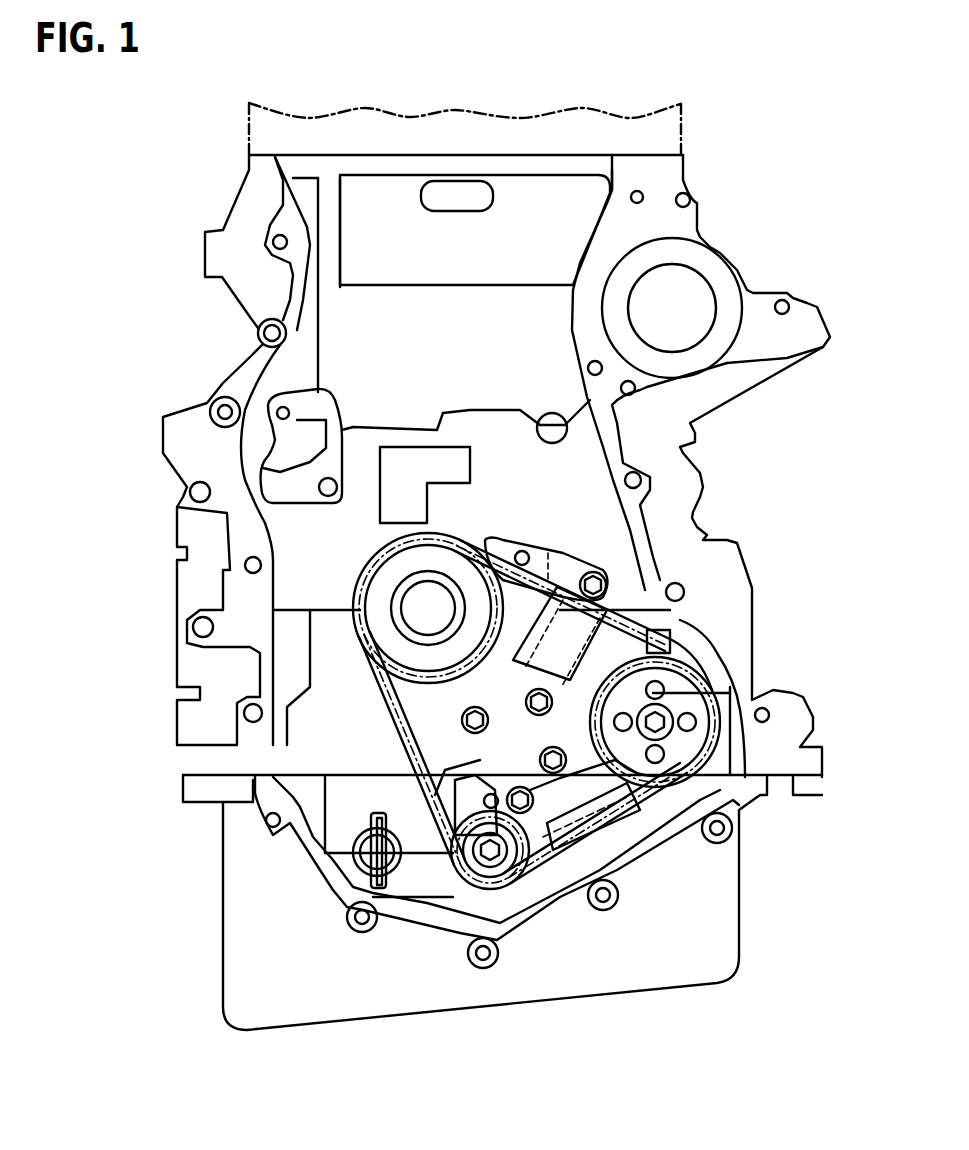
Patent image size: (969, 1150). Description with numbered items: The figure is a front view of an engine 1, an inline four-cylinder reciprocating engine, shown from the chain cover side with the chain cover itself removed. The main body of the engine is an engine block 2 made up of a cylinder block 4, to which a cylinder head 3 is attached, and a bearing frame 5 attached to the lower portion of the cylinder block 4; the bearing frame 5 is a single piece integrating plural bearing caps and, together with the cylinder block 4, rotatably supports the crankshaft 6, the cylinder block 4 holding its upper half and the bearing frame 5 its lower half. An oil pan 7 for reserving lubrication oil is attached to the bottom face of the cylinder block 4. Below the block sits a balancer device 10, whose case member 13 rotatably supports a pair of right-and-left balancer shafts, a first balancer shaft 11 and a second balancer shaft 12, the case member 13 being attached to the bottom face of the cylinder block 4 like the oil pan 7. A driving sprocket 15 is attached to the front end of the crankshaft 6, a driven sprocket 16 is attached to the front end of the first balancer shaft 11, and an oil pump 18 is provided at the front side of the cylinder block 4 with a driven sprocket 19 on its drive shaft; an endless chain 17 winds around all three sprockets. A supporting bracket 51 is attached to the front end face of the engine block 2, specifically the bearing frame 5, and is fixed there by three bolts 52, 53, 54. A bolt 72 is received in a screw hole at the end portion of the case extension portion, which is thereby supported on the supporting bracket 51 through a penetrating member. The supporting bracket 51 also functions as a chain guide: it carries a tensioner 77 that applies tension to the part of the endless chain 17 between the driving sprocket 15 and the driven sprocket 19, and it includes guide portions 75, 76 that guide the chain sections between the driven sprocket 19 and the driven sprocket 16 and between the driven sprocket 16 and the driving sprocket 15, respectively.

The engine 1 is at (752, 172).
The engine block 2 is at (372, 427).
The cylinder head 3 is at (265, 130).
The cylinder block 4 is at (287, 546).
The bearing frame 5 is at (325, 655).
The crankshaft 6 is at (418, 598).
The oil pan 7 is at (237, 867).
The balancer device 10 is at (313, 888).
The first balancer shaft 11 is at (493, 860).
The second balancer shaft 12 is at (370, 857).
The case member 13 is at (410, 883).
The driving sprocket 15 is at (380, 608).
The driven sprocket 16 is at (480, 870).
The endless chain 17 is at (443, 822).
The oil pump 18 is at (723, 712).
The driven sprocket of the oil pump 19 is at (680, 700).
The supporting bracket 51 is at (560, 795).
The bolt 52 is at (478, 714).
The bolt 53 is at (545, 703).
The bolt 54 is at (562, 793).
The bolt 72 is at (528, 794).
The guide portion 75 is at (600, 810).
The guide portion 76 is at (418, 722).
The tensioner 77 is at (635, 625).